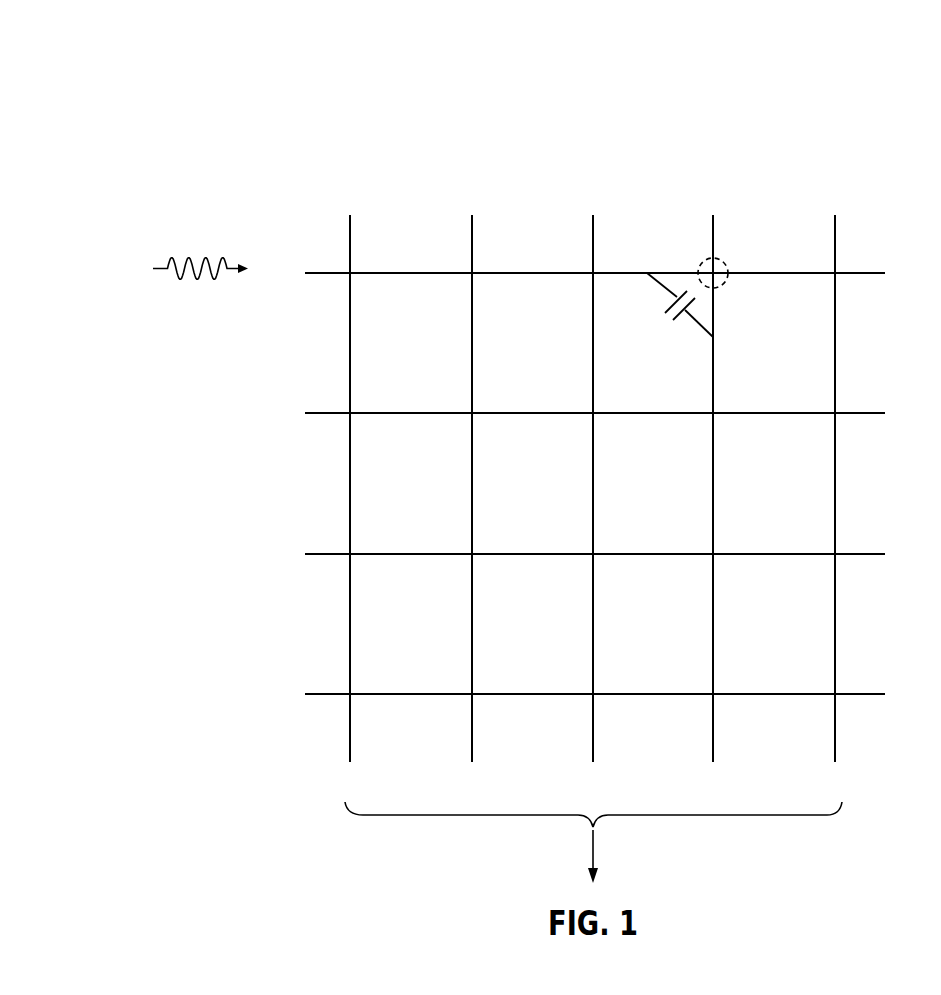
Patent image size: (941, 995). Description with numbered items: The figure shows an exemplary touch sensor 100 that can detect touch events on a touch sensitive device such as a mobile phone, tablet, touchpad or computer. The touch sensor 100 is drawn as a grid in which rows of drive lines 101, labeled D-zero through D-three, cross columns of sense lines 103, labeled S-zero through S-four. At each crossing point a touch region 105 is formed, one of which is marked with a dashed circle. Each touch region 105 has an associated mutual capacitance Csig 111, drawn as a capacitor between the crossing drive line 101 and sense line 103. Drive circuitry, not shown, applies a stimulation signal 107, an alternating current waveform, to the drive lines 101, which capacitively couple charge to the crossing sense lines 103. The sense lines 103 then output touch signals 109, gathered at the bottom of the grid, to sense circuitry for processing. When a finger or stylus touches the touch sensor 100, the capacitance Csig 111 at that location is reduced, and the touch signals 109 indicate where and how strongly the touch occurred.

The touch sensor 100 is at (100, 126).
The drive lines 101 is at (320, 272).
The sense lines 103 is at (350, 222).
The touch region 105 is at (724, 258).
The stimulation signal 107 is at (196, 277).
The touch signals 109 is at (593, 860).
The mutual capacitance Csig 111 is at (668, 313).